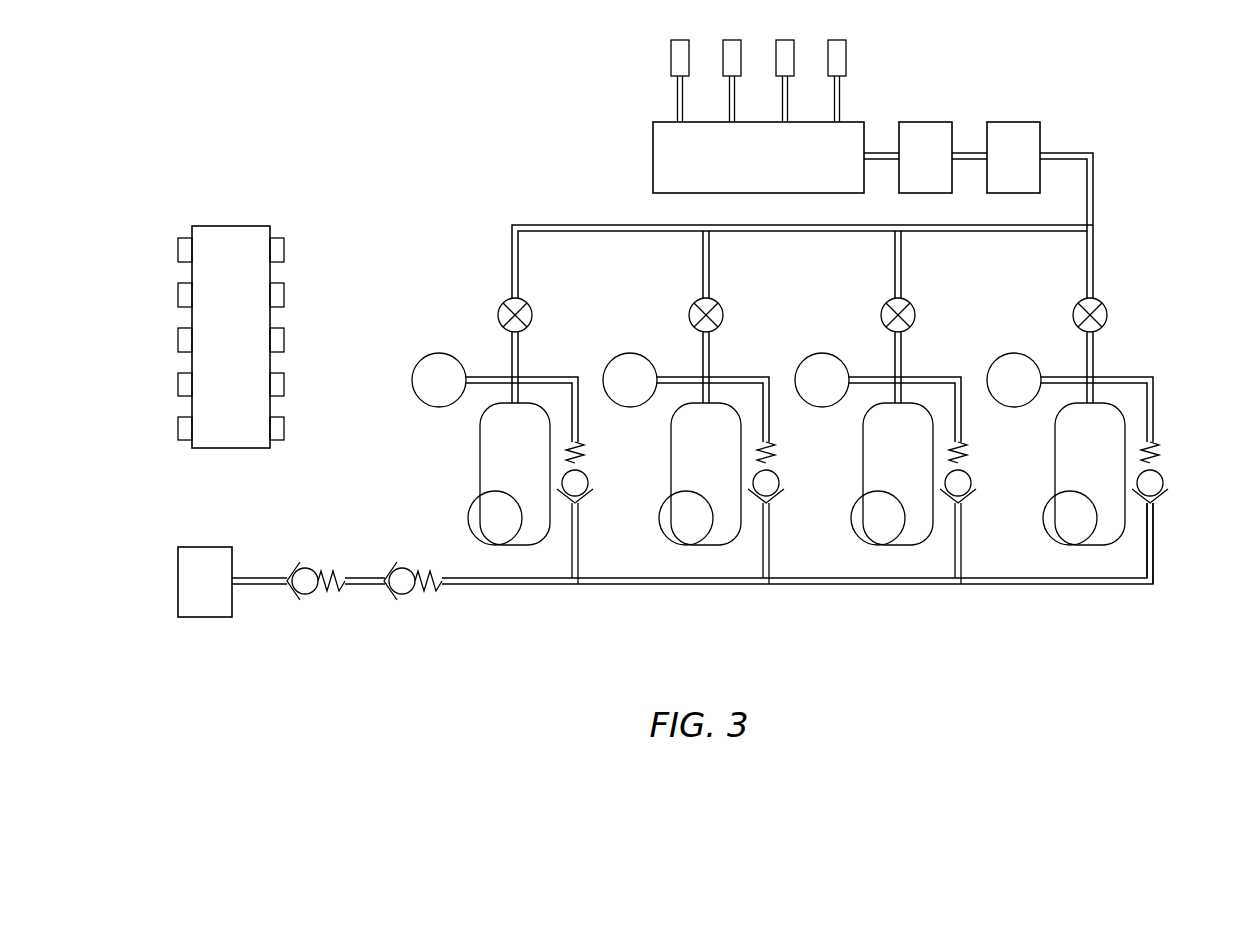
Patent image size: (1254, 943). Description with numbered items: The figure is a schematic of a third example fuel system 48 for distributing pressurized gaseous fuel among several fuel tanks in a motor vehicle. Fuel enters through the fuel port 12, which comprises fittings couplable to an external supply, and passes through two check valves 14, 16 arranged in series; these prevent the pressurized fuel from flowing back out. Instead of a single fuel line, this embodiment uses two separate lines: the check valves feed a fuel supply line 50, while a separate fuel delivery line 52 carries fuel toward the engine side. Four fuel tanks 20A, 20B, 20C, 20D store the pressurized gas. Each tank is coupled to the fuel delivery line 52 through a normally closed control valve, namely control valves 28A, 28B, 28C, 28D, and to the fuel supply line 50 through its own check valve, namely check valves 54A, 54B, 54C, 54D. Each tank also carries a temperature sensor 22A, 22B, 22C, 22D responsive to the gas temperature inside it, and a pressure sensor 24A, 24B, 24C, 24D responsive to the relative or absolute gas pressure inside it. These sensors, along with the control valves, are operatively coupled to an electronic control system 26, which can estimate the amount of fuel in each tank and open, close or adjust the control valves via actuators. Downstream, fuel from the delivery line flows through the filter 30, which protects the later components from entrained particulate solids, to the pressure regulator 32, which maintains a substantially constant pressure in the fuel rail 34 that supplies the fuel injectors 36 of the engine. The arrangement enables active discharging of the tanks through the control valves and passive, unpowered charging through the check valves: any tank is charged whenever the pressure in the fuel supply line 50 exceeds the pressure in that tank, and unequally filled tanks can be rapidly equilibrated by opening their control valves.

The fuel port 12 is at (196, 594).
The check valve 14 is at (318, 628).
The check valve 16 is at (414, 628).
The fuel tank 20A is at (499, 486).
The fuel tank 20B is at (690, 486).
The fuel tank 20C is at (882, 486).
The fuel tank 20D is at (1074, 486).
The temperature sensor 22A is at (479, 529).
The temperature sensor 22B is at (670, 529).
The temperature sensor 22C is at (862, 529).
The temperature sensor 22D is at (1054, 529).
The pressure sensor 24A is at (423, 391).
The pressure sensor 24B is at (614, 391).
The pressure sensor 24C is at (806, 391).
The pressure sensor 24D is at (998, 391).
The electronic control system 26 is at (222, 348).
The control valve 28A is at (500, 307).
The control valve 28B is at (691, 307).
The control valve 28C is at (883, 307).
The control valve 28D is at (1075, 307).
The filter 30 is at (1004, 168).
The pressure regulator 32 is at (916, 168).
The fuel rail 34 is at (748, 168).
The fuel injectors 36 is at (652, 57).
The fuel system 48 is at (318, 122).
The fuel supply line 50 is at (725, 585).
The fuel delivery line 52 is at (613, 224).
The check valve 54A is at (597, 472).
The check valve 54B is at (788, 472).
The check valve 54C is at (980, 472).
The check valve 54D is at (1172, 472).